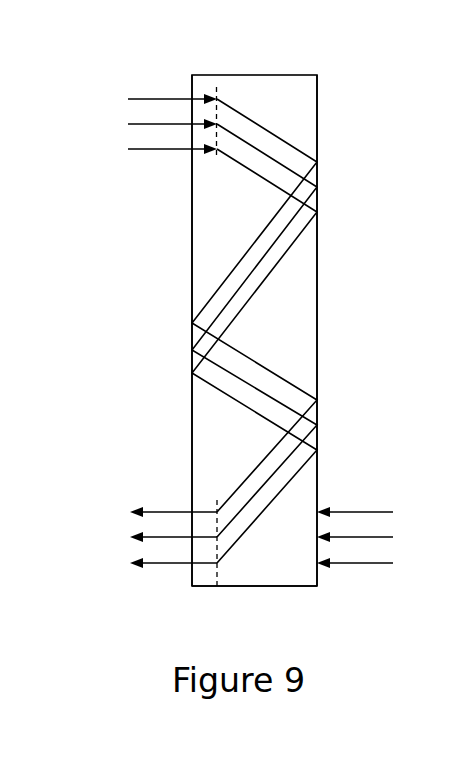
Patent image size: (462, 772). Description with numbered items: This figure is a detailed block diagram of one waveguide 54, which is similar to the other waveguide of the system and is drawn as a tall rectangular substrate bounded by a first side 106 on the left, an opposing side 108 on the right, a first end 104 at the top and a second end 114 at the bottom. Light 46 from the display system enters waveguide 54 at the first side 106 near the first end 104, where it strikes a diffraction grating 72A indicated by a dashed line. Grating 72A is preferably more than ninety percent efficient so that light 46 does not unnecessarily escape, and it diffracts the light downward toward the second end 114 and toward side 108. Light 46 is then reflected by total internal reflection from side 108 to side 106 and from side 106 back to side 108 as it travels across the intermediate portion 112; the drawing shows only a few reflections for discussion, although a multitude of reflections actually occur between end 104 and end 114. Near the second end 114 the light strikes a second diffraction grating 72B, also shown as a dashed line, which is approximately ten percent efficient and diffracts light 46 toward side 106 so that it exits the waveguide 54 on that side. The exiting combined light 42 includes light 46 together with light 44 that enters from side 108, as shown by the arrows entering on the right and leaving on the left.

The combined light 42 is at (178, 512).
The light 44 is at (358, 510).
The light 46 is at (143, 100).
The waveguide 54 is at (191, 85).
The diffraction grating 72A is at (217, 100).
The diffraction grating 72B is at (218, 577).
The first end 104 is at (280, 75).
The first side 106 is at (192, 225).
The side 108 is at (317, 213).
The intermediate portion 112 is at (317, 305).
The second end 114 is at (282, 589).